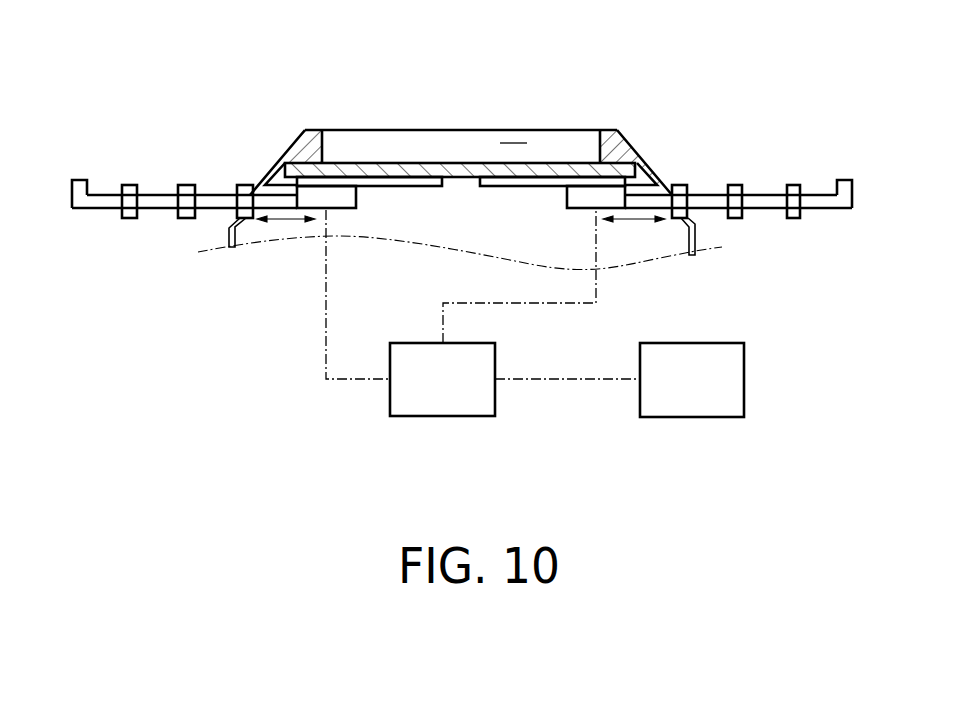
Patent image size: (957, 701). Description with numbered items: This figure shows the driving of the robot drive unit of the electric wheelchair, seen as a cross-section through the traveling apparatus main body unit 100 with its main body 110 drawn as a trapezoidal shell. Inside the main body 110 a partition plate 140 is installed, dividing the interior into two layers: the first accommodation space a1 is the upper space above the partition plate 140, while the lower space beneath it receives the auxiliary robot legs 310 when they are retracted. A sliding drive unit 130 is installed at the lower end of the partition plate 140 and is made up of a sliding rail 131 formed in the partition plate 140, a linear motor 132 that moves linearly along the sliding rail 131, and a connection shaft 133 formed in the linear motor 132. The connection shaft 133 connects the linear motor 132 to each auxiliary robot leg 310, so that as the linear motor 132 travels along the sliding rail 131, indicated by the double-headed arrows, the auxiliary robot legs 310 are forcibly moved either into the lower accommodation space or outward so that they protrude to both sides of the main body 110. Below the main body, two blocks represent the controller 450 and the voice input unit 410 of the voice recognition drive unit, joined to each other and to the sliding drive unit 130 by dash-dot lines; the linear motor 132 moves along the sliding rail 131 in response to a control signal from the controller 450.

The traveling apparatus main body unit 100 is at (471, 113).
The main body 110 is at (622, 133).
The partition plate 140 is at (378, 162).
The first accommodation space a1 is at (510, 142).
The auxiliary robot leg 310 is at (157, 167).
The sliding drive unit 130 is at (412, 282).
The sliding rail 131 is at (316, 210).
The linear motor 132 is at (273, 210).
The connection shaft 133 is at (263, 252).
The controller 450 is at (447, 417).
The voice input unit 410 is at (688, 417).